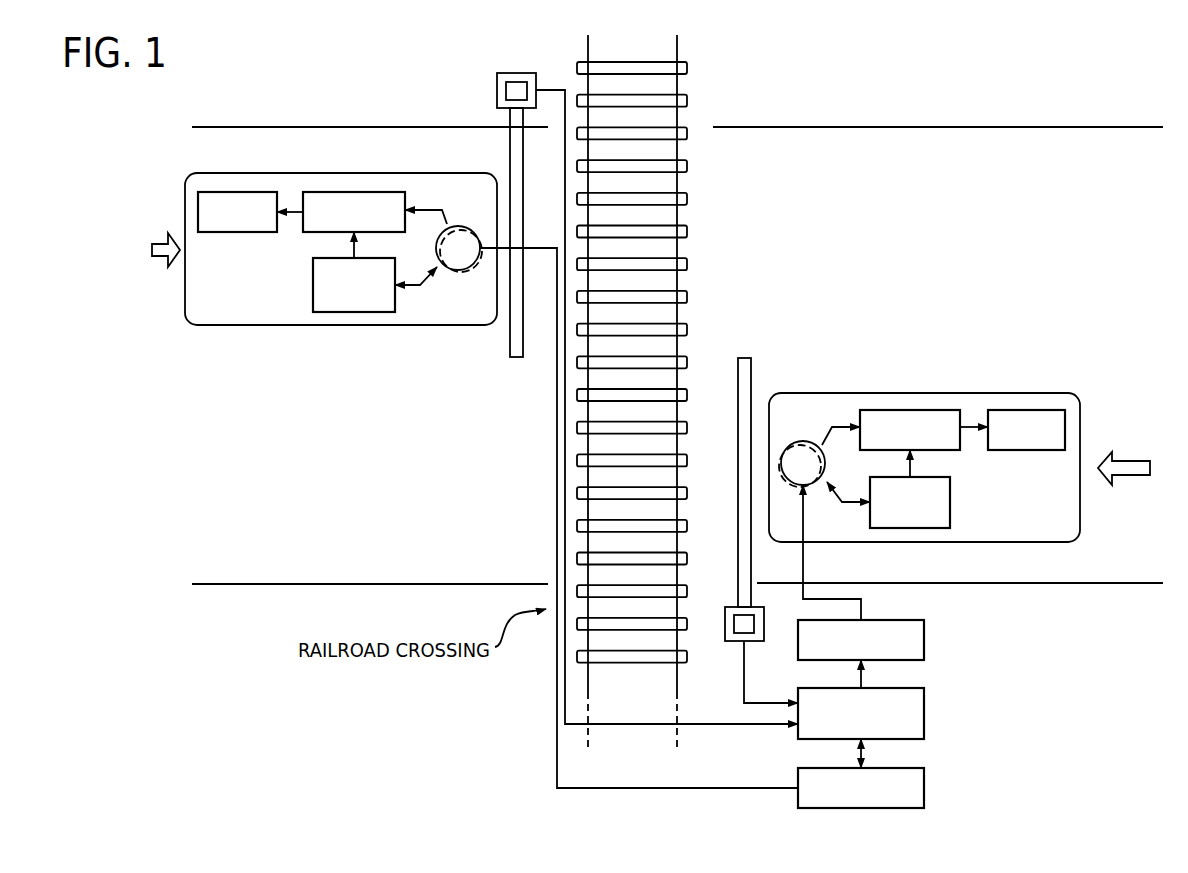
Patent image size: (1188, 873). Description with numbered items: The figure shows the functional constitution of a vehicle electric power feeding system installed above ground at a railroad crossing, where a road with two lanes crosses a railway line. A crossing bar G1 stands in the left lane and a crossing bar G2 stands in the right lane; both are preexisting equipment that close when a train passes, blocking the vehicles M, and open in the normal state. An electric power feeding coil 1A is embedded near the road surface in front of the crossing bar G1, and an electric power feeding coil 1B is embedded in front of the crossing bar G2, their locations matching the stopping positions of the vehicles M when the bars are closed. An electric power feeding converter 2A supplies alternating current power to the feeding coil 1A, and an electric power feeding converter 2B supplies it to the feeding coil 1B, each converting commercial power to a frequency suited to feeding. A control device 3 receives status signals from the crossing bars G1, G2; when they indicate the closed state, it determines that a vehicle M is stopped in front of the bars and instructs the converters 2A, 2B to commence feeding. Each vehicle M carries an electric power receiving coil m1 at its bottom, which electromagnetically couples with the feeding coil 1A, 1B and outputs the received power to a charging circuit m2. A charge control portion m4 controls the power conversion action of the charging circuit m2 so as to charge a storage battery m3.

The electric power feeding coil 1A is at (790, 443).
The electric power feeding coil 1B is at (482, 270).
The electric power receiving coil m1 is at (441, 268).
The charging circuit m2 is at (356, 192).
The storage battery m3 is at (237, 192).
The charge control portion m4 is at (353, 312).
The vehicle M is at (310, 336).
The crossing bar G1 is at (746, 357).
The crossing bar G2 is at (516, 360).
The electric power feeding converter 2A is at (925, 642).
The electric power feeding converter 2B is at (925, 788).
The control device 3 is at (925, 713).